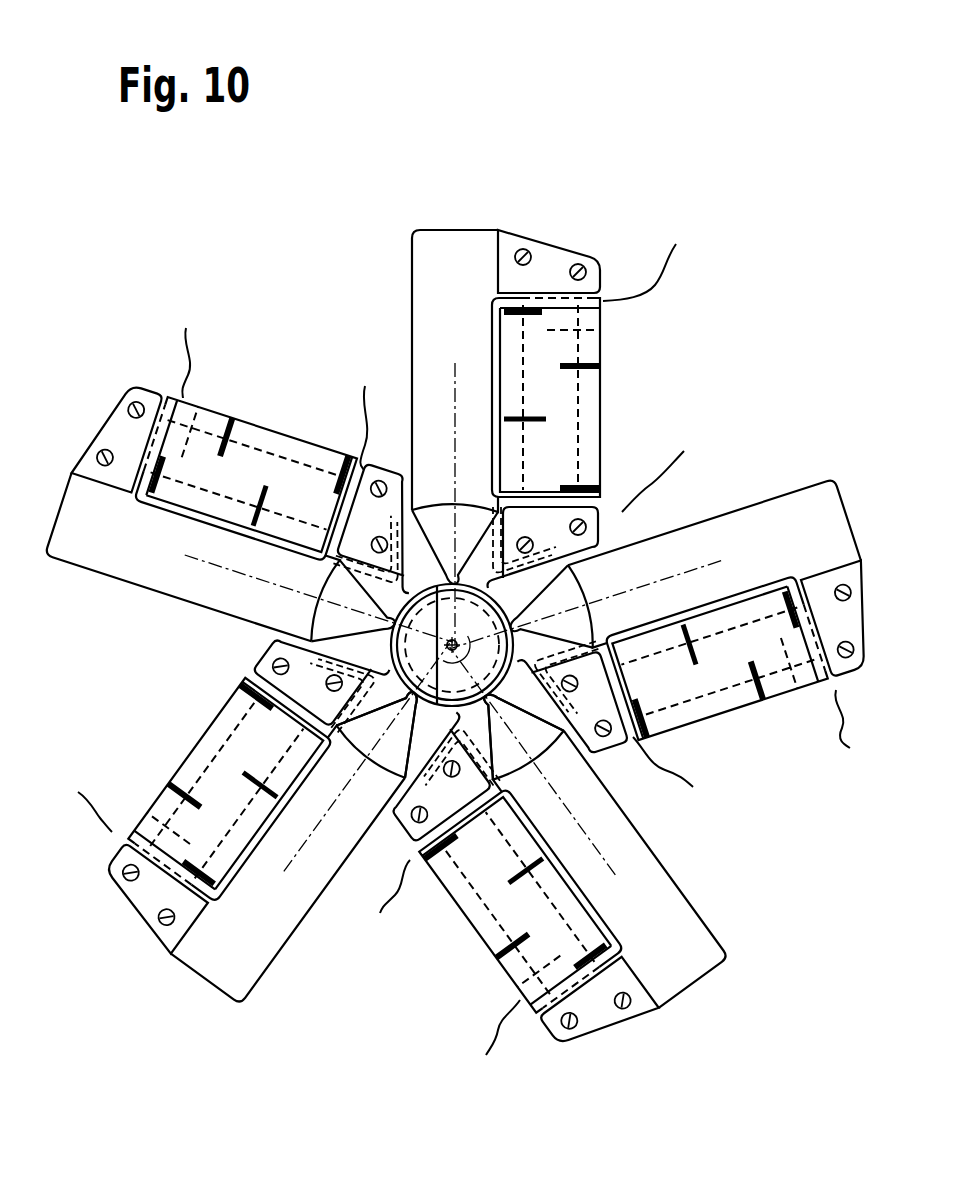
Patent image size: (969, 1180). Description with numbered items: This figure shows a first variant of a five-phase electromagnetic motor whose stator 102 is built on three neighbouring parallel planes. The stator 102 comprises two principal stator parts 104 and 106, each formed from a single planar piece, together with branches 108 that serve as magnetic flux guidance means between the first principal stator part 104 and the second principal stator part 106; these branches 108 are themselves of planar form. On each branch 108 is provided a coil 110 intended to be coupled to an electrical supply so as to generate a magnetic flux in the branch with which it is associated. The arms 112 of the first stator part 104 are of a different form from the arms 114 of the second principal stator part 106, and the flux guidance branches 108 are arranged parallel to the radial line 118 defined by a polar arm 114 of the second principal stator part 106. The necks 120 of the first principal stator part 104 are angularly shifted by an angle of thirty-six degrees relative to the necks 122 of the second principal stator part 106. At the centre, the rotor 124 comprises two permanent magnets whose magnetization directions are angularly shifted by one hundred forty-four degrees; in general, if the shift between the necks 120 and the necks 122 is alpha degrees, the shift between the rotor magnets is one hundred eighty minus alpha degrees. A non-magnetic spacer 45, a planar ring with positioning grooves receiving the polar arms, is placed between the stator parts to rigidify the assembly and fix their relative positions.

The non-magnetic spacer 45 is at (315, 648).
The stator 102 is at (390, 398).
The first principal stator part 104 is at (612, 521).
The second principal stator part 106 is at (456, 226).
The branches 108 is at (588, 332).
The coil 110 is at (592, 395).
The arms 112 is at (516, 645).
The arms 114 is at (752, 540).
The radial line 118 is at (217, 567).
The necks 120 is at (503, 710).
The necks 122 is at (384, 664).
The rotor 124 is at (425, 648).